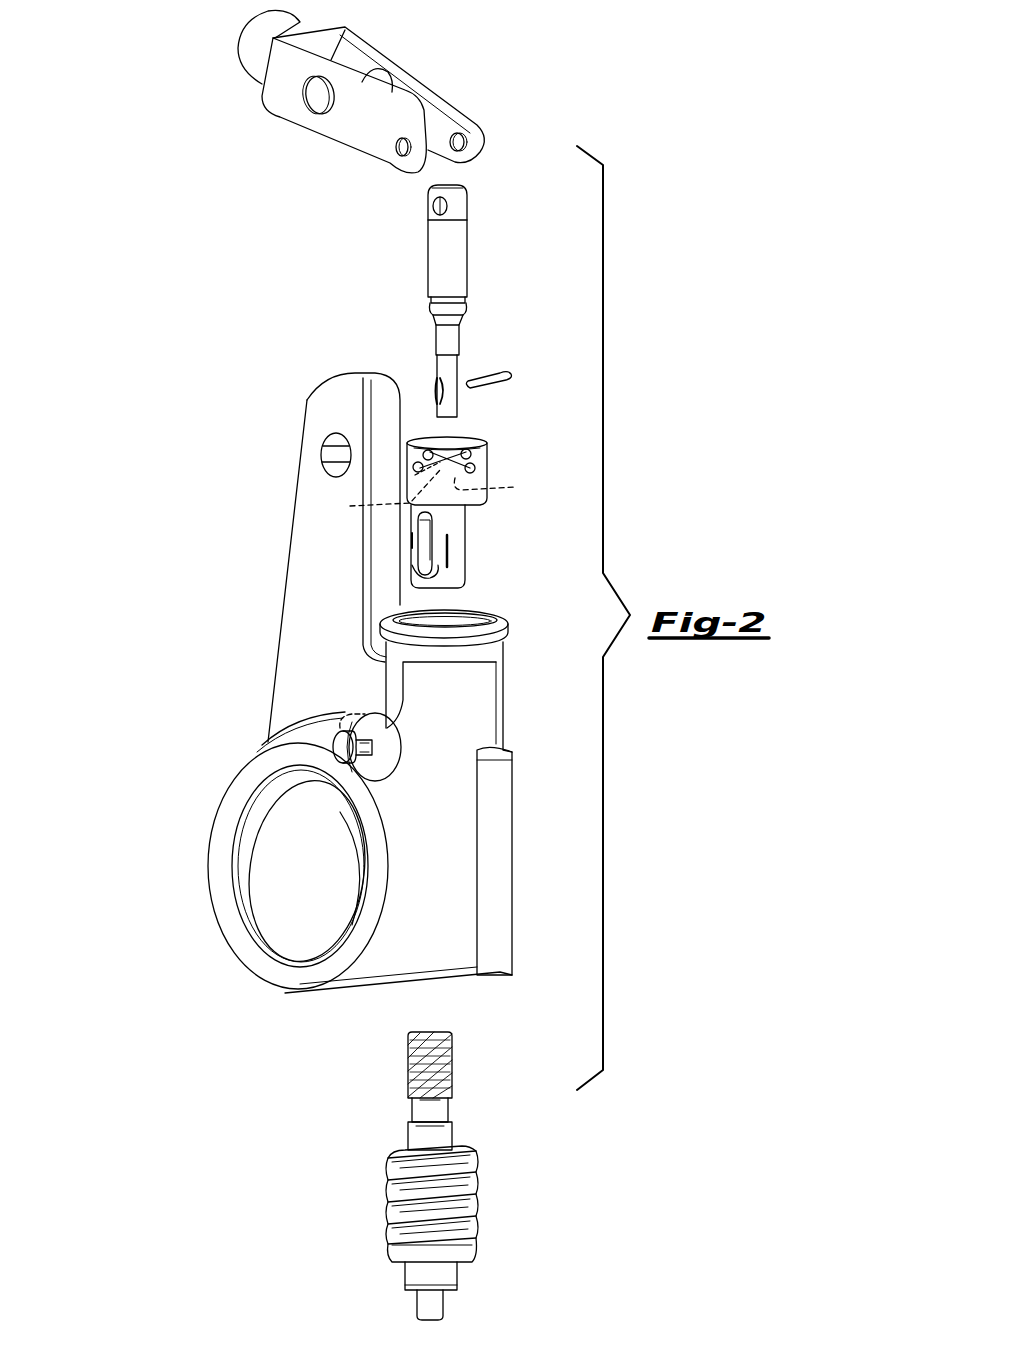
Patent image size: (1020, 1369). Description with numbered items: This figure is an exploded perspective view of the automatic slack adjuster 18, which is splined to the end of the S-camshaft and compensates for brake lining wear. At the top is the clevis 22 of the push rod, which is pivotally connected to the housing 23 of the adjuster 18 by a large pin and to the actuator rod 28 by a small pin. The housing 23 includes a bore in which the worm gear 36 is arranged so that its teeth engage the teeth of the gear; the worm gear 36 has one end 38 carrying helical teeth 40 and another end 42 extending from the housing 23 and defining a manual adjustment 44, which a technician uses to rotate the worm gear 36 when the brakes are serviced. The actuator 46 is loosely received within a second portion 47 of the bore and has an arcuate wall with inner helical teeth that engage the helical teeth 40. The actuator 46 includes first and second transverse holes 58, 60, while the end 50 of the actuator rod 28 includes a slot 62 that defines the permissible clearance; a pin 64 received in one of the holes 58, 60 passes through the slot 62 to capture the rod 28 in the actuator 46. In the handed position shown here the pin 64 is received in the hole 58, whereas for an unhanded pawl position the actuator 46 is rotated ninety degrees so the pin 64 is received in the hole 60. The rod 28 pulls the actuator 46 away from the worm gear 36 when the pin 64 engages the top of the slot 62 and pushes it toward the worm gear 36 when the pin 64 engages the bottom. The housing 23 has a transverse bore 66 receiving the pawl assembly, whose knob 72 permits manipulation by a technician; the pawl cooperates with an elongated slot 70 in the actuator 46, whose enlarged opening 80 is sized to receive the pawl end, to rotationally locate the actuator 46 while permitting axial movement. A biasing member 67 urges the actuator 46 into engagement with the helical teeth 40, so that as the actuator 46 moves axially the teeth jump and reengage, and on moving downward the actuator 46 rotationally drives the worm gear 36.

The automatic slack adjuster 18 is at (212, 312).
The clevis 22 is at (423, 104).
The housing 23 is at (305, 578).
The actuator rod 28 is at (452, 256).
The worm gear 36 is at (474, 1215).
The one end of worm gear 38 is at (400, 1044).
The helical teeth 40 is at (408, 1072).
The another end of worm gear 42 is at (470, 1270).
The manual adjustment 44 is at (435, 1307).
The actuator 46 is at (483, 478).
The second portion of bore 47 is at (460, 623).
The end of actuator rod 50 is at (440, 410).
The first transverse hole 58 is at (383, 502).
The second transverse hole 60 is at (501, 493).
The slot 62 is at (438, 378).
The pin 64 is at (492, 378).
The bore 66 is at (385, 748).
The biasing member 67 is at (410, 540).
The elongated slot 70 is at (432, 522).
The knob 72 is at (341, 748).
The enlarged opening 80 is at (420, 583).